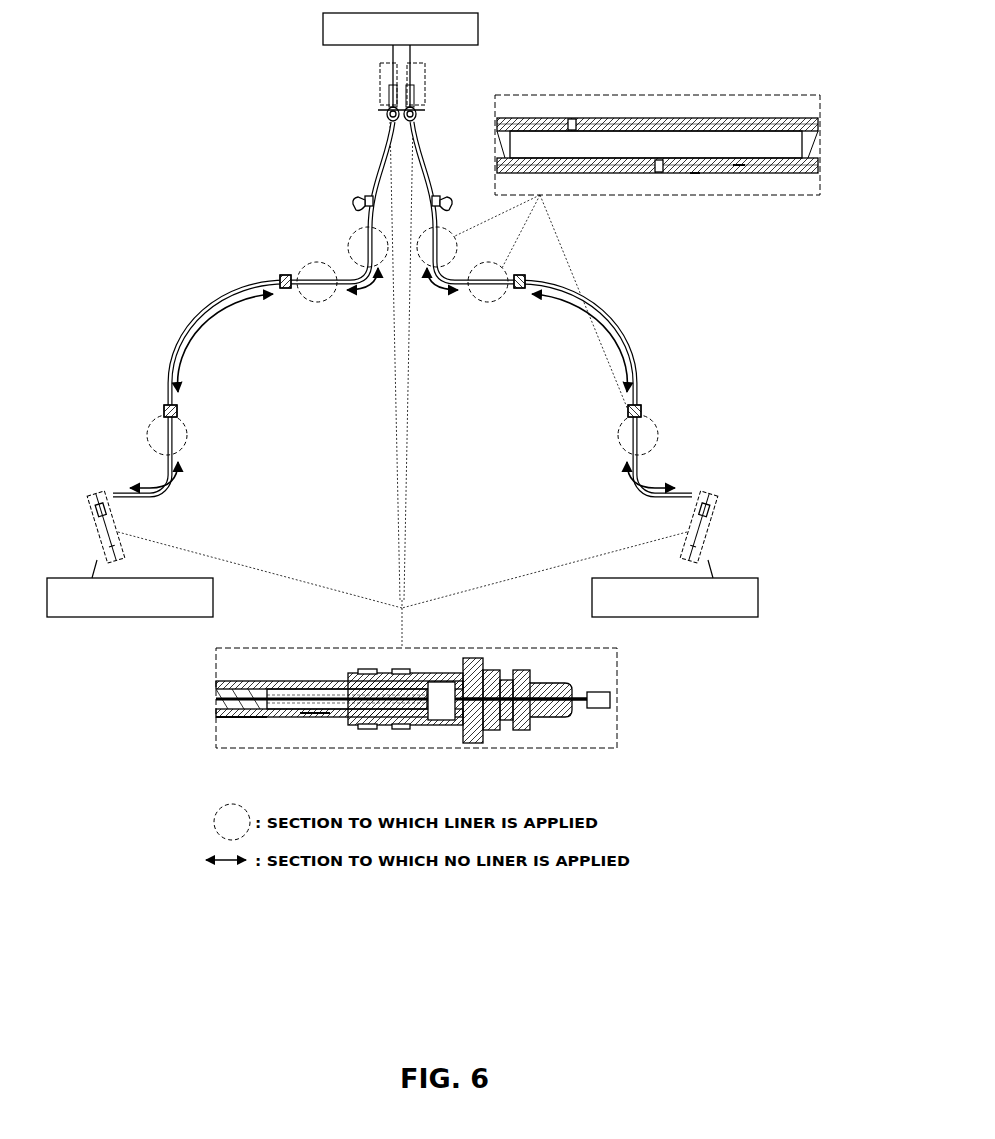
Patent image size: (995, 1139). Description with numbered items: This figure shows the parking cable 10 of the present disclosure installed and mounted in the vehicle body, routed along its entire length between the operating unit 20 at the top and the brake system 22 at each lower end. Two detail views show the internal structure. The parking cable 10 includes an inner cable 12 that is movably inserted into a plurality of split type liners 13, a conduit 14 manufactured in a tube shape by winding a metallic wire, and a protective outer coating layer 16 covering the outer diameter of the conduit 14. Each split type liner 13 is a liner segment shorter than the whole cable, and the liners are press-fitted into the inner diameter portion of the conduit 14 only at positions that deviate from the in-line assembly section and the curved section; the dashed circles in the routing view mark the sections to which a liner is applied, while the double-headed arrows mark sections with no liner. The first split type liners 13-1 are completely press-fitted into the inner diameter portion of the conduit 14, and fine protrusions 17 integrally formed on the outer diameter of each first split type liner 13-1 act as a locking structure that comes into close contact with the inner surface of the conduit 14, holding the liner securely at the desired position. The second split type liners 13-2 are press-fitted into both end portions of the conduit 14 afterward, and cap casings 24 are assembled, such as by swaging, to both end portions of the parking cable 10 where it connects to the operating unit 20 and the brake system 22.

The parking cable 10 is at (190, 325).
The inner cable 12 is at (243, 682).
The split type liner 13 is at (660, 118).
The first split type liner 13-1 is at (782, 148).
The second split type liner 13-2 is at (345, 704).
The conduit 14 is at (740, 165).
The protective outer coating layer 16 is at (694, 173).
The fine protrusion 17 is at (572, 118).
The operating unit 20 is at (478, 27).
The brake system 22 is at (213, 598).
The cap casing 24 is at (438, 722).